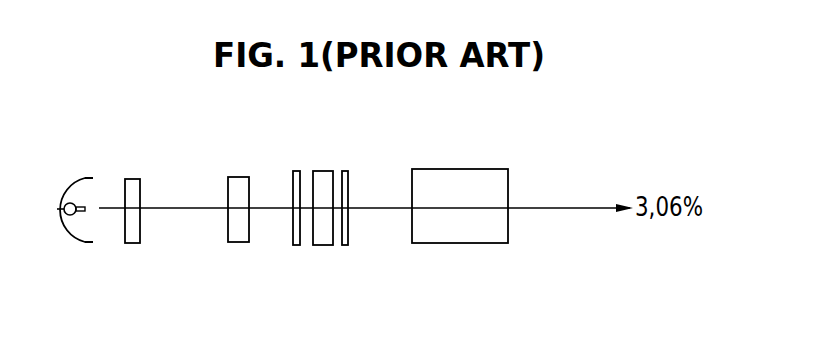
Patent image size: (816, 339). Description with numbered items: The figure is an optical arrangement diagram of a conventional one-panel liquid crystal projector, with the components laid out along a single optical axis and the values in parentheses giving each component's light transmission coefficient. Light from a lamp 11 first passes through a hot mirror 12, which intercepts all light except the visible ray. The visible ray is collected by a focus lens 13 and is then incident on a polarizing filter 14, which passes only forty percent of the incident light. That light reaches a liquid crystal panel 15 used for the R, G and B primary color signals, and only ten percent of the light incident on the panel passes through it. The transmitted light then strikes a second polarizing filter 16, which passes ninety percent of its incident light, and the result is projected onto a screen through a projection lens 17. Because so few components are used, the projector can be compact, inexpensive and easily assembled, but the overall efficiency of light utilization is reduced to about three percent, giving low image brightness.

The lamp 11 is at (93, 245).
The hot mirror 12 is at (137, 243).
The focus lens 13 is at (239, 242).
The polarizing filter 14 is at (296, 170).
The liquid crystal panel 15 is at (323, 245).
The polarizing filter 16 is at (344, 170).
The projection lens 17 is at (472, 243).